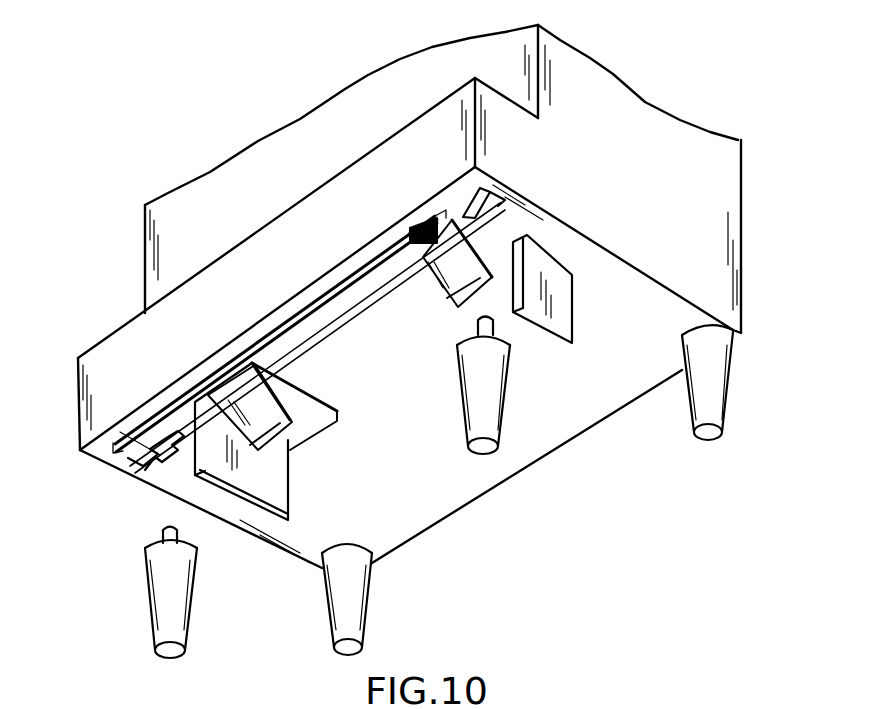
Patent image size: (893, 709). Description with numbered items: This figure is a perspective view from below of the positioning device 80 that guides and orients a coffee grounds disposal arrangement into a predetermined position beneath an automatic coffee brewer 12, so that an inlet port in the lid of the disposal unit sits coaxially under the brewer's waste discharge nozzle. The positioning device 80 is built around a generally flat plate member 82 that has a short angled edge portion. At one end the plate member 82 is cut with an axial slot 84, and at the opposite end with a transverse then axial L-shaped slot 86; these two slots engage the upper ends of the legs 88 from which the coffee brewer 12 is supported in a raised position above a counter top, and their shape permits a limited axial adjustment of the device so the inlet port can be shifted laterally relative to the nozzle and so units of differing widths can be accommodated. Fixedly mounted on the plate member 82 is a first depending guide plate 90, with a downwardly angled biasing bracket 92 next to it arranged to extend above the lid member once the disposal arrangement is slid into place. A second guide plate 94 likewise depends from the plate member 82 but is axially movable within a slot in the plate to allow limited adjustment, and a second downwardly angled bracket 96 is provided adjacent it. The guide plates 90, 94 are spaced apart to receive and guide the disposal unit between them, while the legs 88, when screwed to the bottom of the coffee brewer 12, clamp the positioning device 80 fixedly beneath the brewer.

The coffee brewer 12 is at (613, 73).
The positioning device 80 is at (296, 330).
The plate member 82 is at (312, 340).
The axial slot 84 is at (500, 186).
The L-shaped slot 86 is at (158, 452).
The legs 88 is at (500, 423).
The first depending guide plate 90 is at (253, 503).
The downwardly angled bracket 92 is at (282, 435).
The second guide plate 94 is at (573, 303).
The second downwardly angled bracket 96 is at (440, 290).